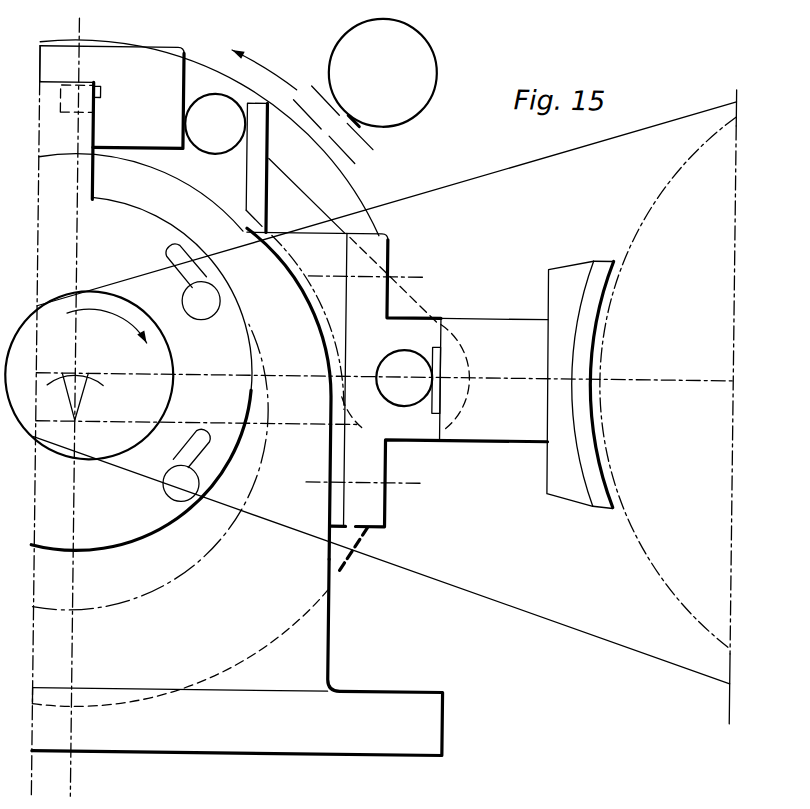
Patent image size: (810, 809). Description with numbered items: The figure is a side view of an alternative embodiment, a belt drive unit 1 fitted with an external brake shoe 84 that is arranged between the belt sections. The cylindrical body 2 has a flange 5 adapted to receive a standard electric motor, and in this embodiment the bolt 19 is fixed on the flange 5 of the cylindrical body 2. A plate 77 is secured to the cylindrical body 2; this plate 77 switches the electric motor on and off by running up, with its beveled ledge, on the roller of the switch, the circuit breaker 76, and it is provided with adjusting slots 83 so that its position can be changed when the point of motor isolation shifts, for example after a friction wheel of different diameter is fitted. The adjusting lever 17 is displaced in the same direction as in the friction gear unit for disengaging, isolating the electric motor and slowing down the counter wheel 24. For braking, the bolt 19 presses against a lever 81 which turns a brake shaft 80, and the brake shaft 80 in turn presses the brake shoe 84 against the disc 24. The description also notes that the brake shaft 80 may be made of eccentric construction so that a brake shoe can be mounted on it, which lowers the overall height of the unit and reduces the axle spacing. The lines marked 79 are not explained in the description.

The belt drive unit 1 is at (298, 660).
The cylindrical body 2 is at (152, 590).
The flange 5 is at (339, 562).
The adjusting lever 17 is at (395, 117).
The bolt 19 is at (228, 140).
The counter wheel 24 is at (654, 203).
The circuit breaker 76 is at (111, 97).
The plate 77 is at (140, 238).
The reference lines 79 is at (490, 176).
The brake shaft 80 is at (410, 405).
The lever 81 is at (50, 112).
The adjusting slots 83 is at (203, 460).
The external brake shoe 84 is at (568, 483).